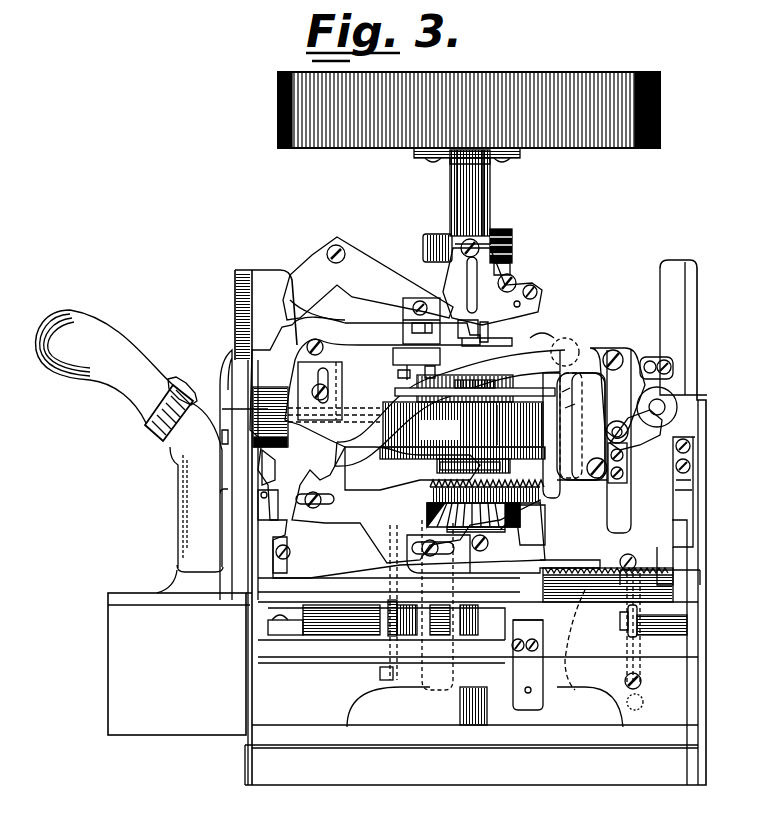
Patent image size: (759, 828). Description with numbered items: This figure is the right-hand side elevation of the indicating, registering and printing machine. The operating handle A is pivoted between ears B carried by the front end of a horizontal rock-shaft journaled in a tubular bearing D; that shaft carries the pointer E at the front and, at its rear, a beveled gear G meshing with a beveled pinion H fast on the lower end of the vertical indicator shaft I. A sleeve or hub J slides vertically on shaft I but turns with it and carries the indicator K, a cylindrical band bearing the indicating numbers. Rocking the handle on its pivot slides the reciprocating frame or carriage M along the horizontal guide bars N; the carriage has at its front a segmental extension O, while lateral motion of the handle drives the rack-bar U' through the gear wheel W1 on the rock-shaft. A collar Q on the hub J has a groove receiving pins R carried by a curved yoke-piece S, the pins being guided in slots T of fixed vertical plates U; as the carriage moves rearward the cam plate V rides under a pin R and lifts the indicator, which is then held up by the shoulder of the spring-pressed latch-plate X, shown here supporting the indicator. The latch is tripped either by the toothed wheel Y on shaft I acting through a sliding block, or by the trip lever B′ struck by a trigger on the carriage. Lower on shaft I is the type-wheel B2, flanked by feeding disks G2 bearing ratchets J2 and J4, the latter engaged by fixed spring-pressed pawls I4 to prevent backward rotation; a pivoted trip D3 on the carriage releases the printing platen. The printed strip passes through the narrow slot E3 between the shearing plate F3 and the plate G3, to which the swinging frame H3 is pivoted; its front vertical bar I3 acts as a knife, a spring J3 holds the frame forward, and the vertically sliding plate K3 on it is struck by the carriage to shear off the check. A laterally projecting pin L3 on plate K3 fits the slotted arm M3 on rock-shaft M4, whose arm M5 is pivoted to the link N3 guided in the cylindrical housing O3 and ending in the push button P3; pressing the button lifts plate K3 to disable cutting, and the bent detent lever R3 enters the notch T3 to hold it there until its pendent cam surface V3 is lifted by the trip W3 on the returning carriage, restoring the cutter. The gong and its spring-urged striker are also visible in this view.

The indicator K is at (662, 125).
The sleeve or hub J is at (492, 178).
The curved yoke-piece S is at (423, 240).
The collar Q is at (512, 236).
The pins R is at (464, 243).
The spring-pressed latch-plate X is at (500, 268).
The slots T is at (467, 285).
The cam plate V is at (365, 285).
The fixed vertical plates U is at (421, 306).
The trip lever B′ is at (488, 336).
The reciprocating frame or carriage M is at (485, 660).
The arm or link N3 is at (560, 345).
The spring-pressed pawls I4 is at (416, 364).
The feeding disks G2 is at (377, 443).
The type-wheel B2 is at (467, 424).
The ratchets J2 is at (496, 420).
The ratchets J4 is at (495, 384).
The beveled gear G is at (427, 510).
The spring J3 is at (515, 495).
The beveled pinion H is at (528, 527).
The front vertical bar I3 is at (628, 568).
The toothed wheel Y is at (572, 420).
The narrow slot E3 is at (574, 387).
The shearing plate F3 is at (578, 405).
The second plate G3 is at (585, 456).
The swinging frame H3 is at (620, 614).
The vertically sliding plate K3 is at (625, 505).
The arm M3 is at (635, 405).
The laterally projecting pin L3 is at (635, 440).
The rock-shaft M4 is at (668, 405).
The arm M5 is at (658, 361).
The segmental extension O is at (180, 664).
The ears B is at (190, 579).
The operating handle or lever A is at (190, 511).
The pointer E is at (222, 385).
The push button P3 is at (234, 408).
The notch T3 is at (270, 417).
The cylindrical housing O3 is at (278, 395).
The bent detent lever R3 is at (300, 432).
The pendent cam surface V3 is at (280, 470).
The trip W3 is at (272, 485).
The tubular bearing D is at (340, 625).
The gear wheel W1 is at (402, 628).
The rack-bar U' is at (374, 604).
The vertical indicator shaft I is at (460, 705).
The horizontal guide bars N is at (549, 665).
The pivoted trip D3 is at (585, 525).